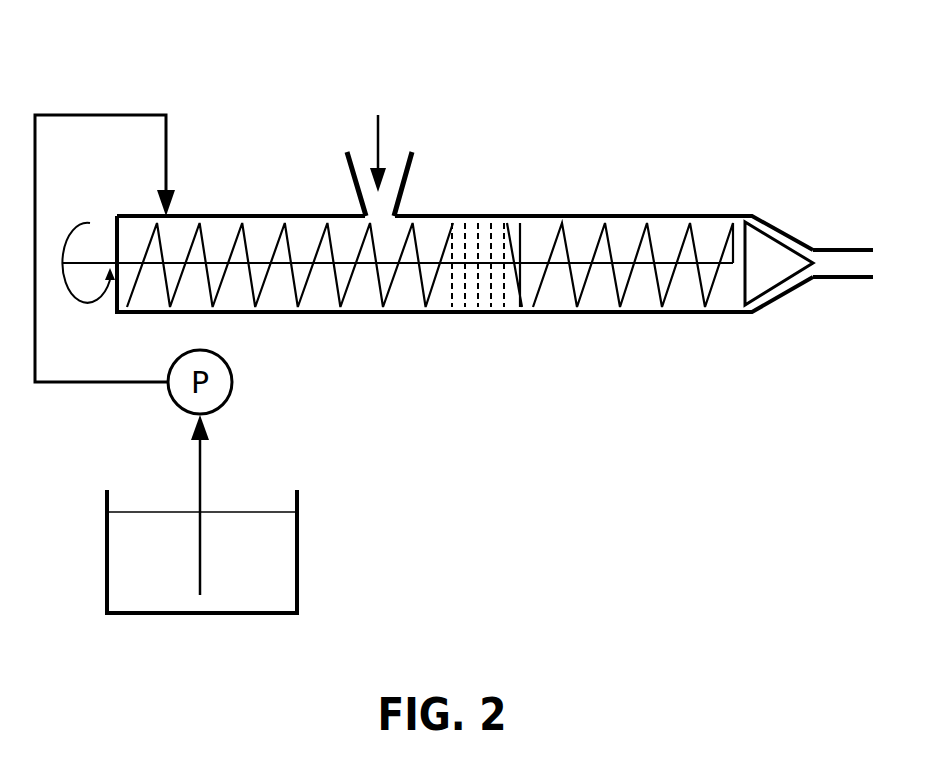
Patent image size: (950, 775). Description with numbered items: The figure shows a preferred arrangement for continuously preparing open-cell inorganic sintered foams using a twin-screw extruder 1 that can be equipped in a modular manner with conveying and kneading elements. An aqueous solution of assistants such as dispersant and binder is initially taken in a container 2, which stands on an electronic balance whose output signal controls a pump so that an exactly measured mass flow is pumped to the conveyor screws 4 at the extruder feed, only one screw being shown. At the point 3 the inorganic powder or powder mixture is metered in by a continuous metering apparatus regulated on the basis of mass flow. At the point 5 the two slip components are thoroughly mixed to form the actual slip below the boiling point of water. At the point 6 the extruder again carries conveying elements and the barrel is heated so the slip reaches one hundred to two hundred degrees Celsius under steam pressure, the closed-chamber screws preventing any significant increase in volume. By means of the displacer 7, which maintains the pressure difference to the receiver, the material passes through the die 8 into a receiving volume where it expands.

The twin-screw extruder 1 is at (577, 190).
The container 2 is at (316, 507).
The powder metering point 3 is at (383, 95).
The conveyor screw 4 is at (208, 217).
The mixing point 5 is at (447, 304).
The heated conveying zone 6 is at (652, 303).
The displacer 7 is at (770, 287).
The die 8 is at (834, 250).